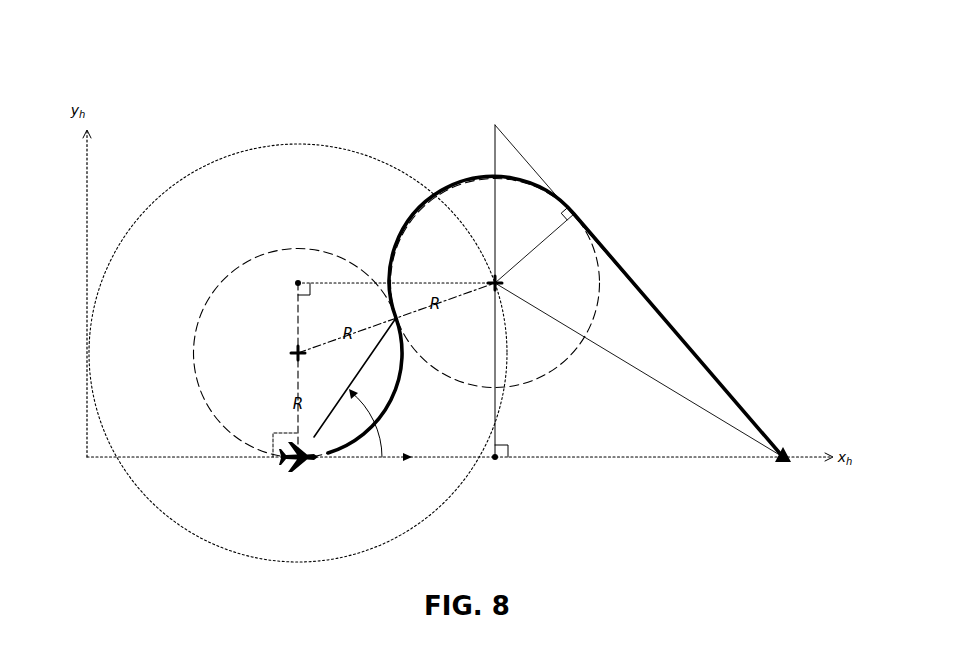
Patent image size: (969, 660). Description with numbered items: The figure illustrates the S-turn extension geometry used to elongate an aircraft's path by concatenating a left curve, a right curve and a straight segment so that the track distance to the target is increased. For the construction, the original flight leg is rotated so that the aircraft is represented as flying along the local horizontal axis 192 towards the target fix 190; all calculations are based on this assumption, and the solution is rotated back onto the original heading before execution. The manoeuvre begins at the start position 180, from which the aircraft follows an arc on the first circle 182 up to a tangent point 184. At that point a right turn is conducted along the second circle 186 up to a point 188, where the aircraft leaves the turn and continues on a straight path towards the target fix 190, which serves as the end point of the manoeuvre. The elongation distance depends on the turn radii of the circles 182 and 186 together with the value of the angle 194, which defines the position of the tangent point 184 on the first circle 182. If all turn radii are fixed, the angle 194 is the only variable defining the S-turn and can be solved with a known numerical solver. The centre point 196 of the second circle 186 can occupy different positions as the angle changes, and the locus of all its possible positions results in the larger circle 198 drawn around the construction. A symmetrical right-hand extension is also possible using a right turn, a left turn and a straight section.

The start position 180 is at (292, 470).
The circle 182 is at (195, 358).
The point 184 is at (391, 313).
The circle 186 is at (563, 361).
The point 188 is at (577, 209).
The target fix 190 is at (778, 465).
The local horizontal axis 192 is at (572, 460).
The angle 194 is at (381, 432).
The centre point 196 is at (492, 290).
The circle 198 is at (267, 143).